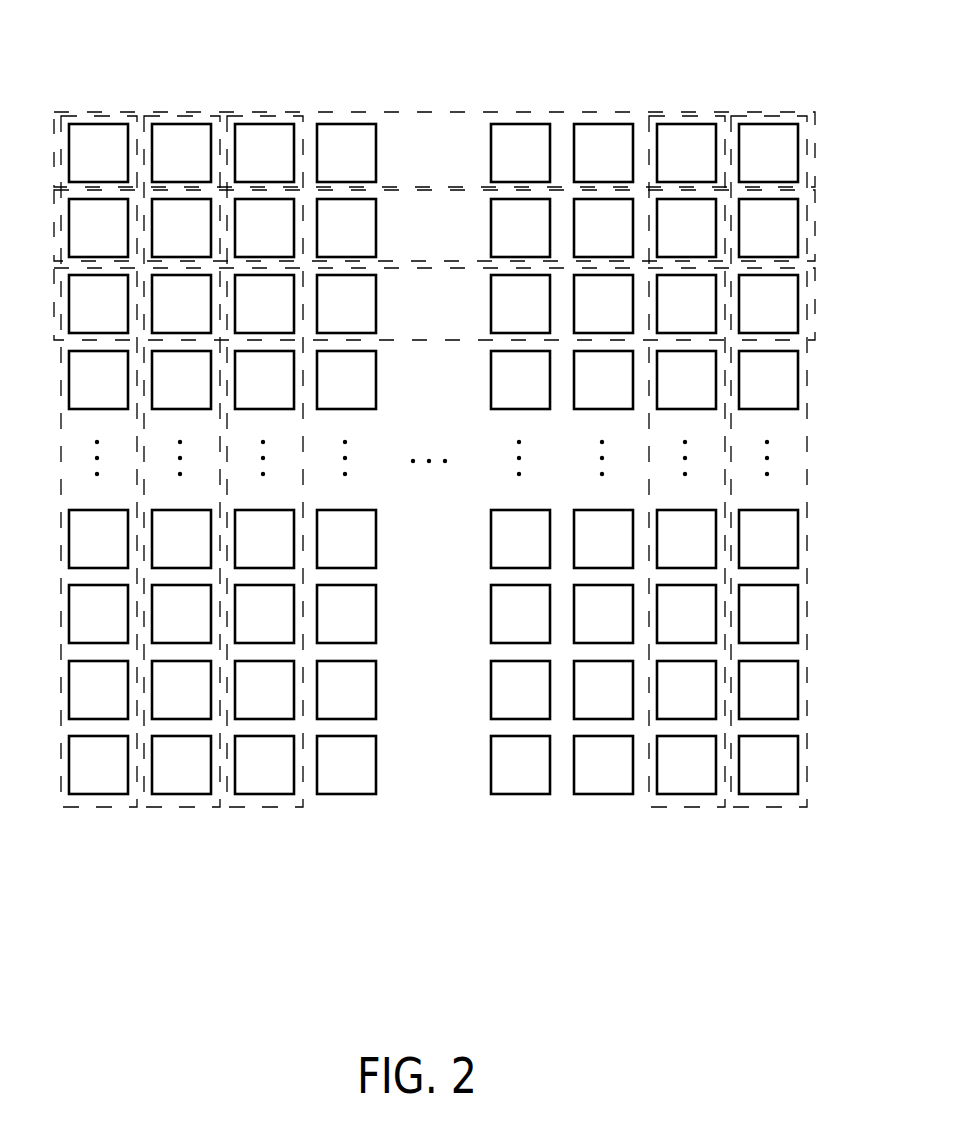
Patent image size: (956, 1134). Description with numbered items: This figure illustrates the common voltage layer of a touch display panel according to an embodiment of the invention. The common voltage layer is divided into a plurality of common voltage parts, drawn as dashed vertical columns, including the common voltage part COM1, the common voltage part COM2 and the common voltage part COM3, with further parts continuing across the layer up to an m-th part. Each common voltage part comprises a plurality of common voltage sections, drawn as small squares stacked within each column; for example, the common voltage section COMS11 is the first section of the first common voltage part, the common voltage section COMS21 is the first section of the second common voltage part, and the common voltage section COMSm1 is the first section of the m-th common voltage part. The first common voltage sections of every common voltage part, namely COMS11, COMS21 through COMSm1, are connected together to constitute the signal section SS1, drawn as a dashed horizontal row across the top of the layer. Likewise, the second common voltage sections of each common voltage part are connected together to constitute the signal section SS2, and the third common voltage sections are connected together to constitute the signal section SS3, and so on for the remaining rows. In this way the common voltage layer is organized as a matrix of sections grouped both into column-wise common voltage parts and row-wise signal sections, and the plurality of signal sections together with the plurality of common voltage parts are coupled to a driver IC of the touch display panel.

The common voltage section COMS11 is at (100, 140).
The common voltage section COMS21 is at (182, 135).
The common voltage section COMSm1 is at (768, 140).
The signal section SS1 is at (817, 150).
The signal section SS2 is at (817, 228).
The signal section SS3 is at (815, 303).
The common voltage part COM1 is at (99, 807).
The common voltage part COM2 is at (183, 807).
The common voltage part COM3 is at (267, 807).